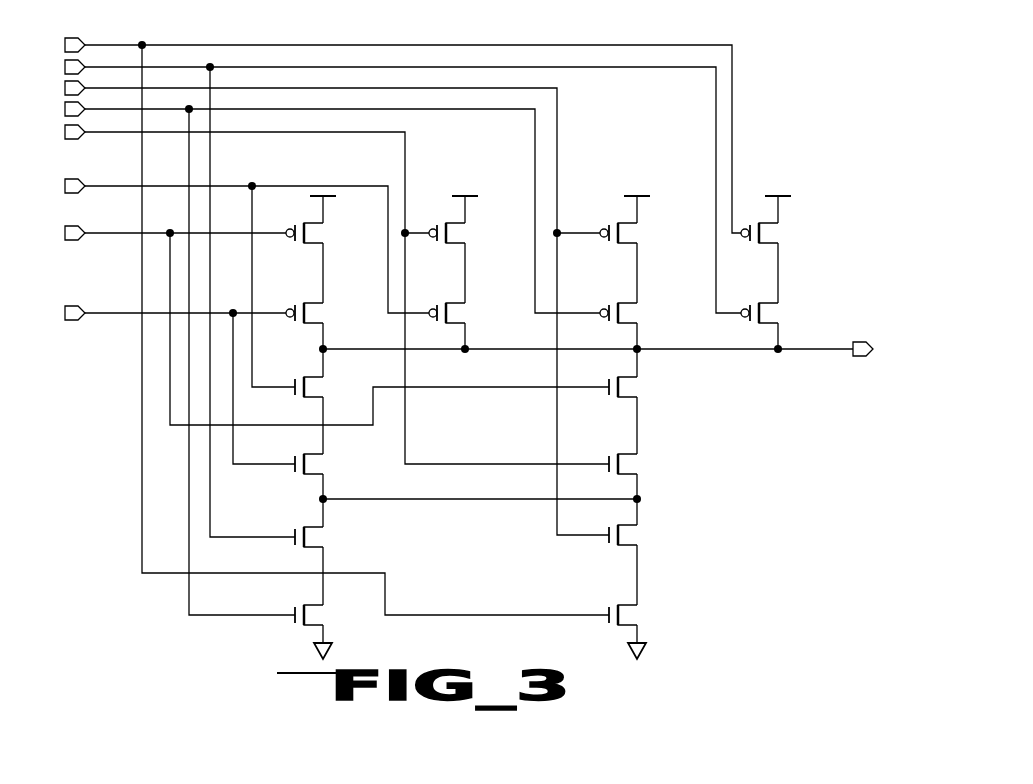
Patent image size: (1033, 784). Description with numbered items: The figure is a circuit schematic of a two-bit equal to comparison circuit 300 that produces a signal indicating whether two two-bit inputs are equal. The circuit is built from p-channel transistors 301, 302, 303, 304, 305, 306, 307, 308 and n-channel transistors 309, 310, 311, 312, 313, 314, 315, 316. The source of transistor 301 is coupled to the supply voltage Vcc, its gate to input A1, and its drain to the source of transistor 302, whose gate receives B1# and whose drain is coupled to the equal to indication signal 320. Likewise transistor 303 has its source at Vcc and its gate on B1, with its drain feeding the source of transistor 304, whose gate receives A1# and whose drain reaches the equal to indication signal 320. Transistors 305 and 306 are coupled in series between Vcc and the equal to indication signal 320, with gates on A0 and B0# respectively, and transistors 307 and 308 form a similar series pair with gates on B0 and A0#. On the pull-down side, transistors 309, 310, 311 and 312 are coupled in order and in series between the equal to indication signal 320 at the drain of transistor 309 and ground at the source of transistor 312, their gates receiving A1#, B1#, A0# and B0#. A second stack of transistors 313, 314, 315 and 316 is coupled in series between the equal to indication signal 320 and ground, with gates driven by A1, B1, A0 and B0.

The comparator circuit 300 is at (450, 336).
The p-channel transistor 301 is at (316, 237).
The p-channel transistor 302 is at (316, 317).
The p-channel transistor 303 is at (458, 237).
The p-channel transistor 304 is at (458, 317).
The p-channel transistor 305 is at (630, 237).
The p-channel transistor 306 is at (630, 317).
The p-channel transistor 307 is at (771, 237).
The p-channel transistor 308 is at (771, 317).
The n-channel transistor 309 is at (316, 391).
The n-channel transistor 310 is at (316, 468).
The n-channel transistor 311 is at (316, 541).
The n-channel transistor 312 is at (316, 619).
The n-channel transistor 313 is at (630, 391).
The n-channel transistor 314 is at (630, 468).
The n-channel transistor 315 is at (630, 539).
The n-channel transistor 316 is at (630, 619).
The equal to indication signal 320 is at (833, 351).